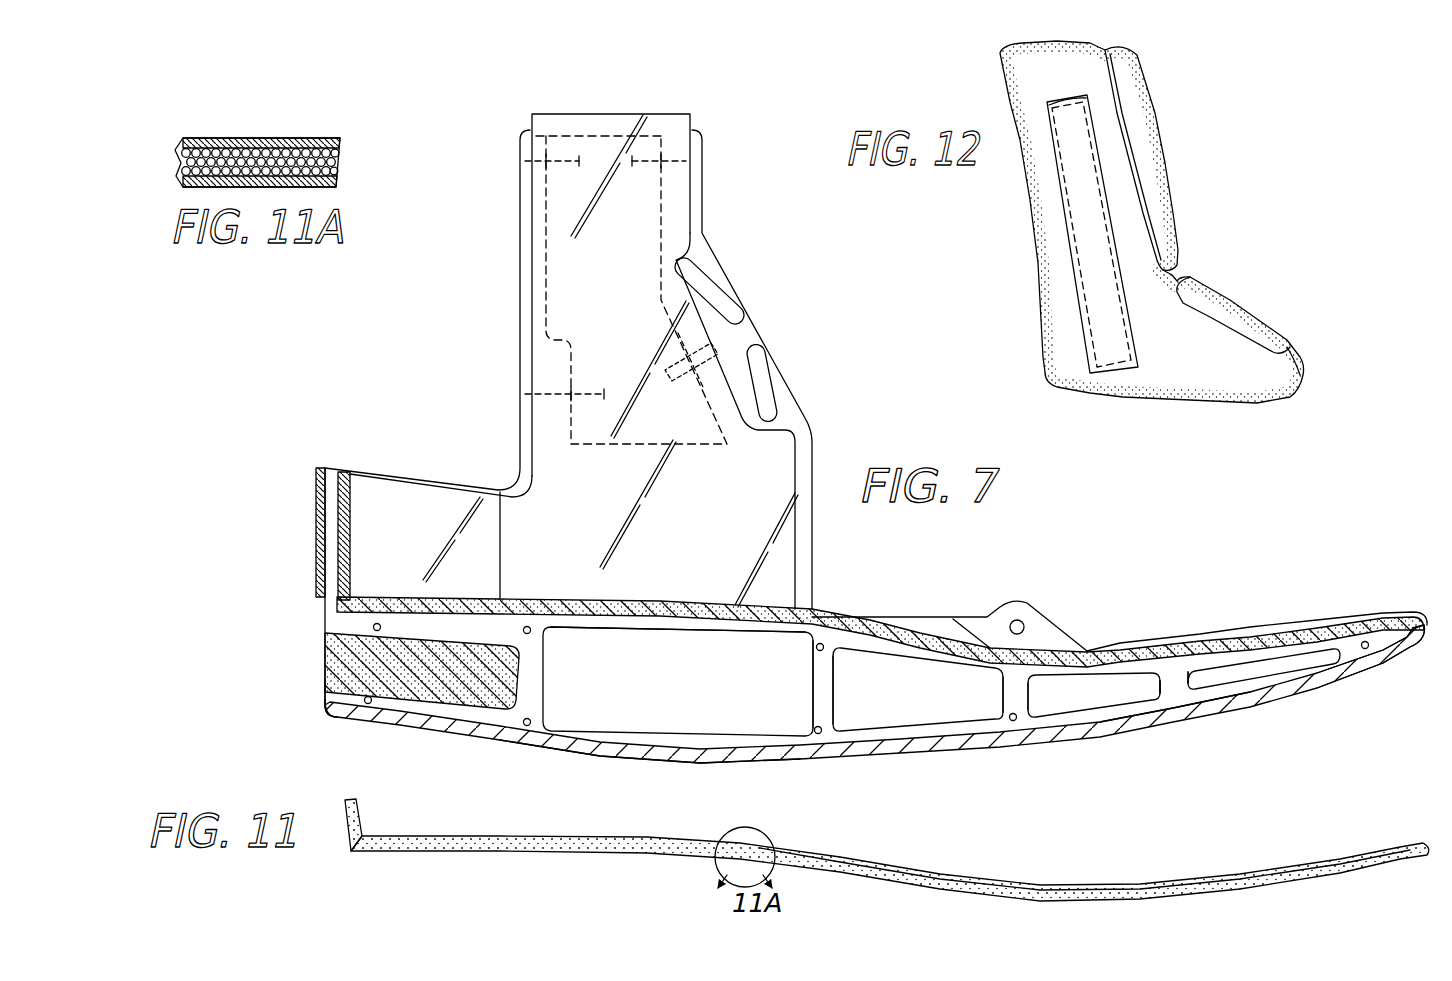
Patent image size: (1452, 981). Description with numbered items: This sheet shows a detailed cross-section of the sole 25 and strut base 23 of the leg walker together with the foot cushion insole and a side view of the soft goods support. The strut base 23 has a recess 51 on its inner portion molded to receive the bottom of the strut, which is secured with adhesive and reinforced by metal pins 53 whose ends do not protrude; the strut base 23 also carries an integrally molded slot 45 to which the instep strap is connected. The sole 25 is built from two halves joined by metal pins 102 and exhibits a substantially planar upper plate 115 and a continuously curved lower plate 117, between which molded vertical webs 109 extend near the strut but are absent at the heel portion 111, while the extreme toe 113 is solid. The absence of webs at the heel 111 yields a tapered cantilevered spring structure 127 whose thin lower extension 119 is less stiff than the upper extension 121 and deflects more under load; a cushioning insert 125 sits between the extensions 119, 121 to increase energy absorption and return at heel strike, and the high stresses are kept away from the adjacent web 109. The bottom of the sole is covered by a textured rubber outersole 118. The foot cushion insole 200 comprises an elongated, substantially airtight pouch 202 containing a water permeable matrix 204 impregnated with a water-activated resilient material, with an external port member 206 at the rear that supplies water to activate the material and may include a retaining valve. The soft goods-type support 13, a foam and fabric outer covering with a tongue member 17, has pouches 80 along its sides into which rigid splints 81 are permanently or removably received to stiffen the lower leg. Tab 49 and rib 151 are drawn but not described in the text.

In FIG. 12, the soft goods-type support 13 is at (1177, 131).
In FIG. 12, the tongue member 17 is at (1300, 357).
In FIG. 7, the strut base 23 is at (503, 306).
In FIG. 7, the sole 25 is at (672, 764).
In FIG. 7, the integrally molded slot 45 is at (739, 336).
In FIG. 7, the mounting tab 49 is at (1003, 603).
In FIG. 7, the recess 51 is at (629, 226).
In FIG. 7, the metal pins 53 is at (564, 170).
In FIG. 12, the pouches 80 is at (1062, 212).
In FIG. 12, the rigid splints 81 is at (1080, 270).
In FIG. 7, the metal pins 102 is at (381, 627).
In FIG. 7, the vertical webs 109 is at (537, 680).
In FIG. 7, the heel portion 111 is at (320, 713).
In FIG. 7, the extreme toe 113 is at (1403, 635).
In FIG. 7, the upper sole plate 115 is at (1200, 647).
In FIG. 7, the lower sole plate 117 is at (1170, 706).
In FIG. 7, the textured rubber outersole 118 is at (920, 753).
In FIG. 7, the lower extension 119 is at (323, 687).
In FIG. 7, the upper extension 121 is at (333, 620).
In FIG. 7, the cushioning insert 125 is at (333, 647).
In FIG. 7, the cantilevered spring structure 127 is at (323, 658).
In FIG. 7, the ribs 151 is at (663, 643).
In FIG. 7, the foot cushion insole 200 is at (1053, 650).
In FIG. 11A, the foot cushion insole 200 is at (260, 138).
In FIG. 11, the foot cushion insole 200 is at (1013, 857).
In FIG. 11A, the elongated pouch 202 is at (318, 138).
In FIG. 11, the elongated pouch 202 is at (647, 857).
In FIG. 11A, the water permeable matrix 204 is at (342, 161).
In FIG. 11, the external port member 206 is at (360, 827).